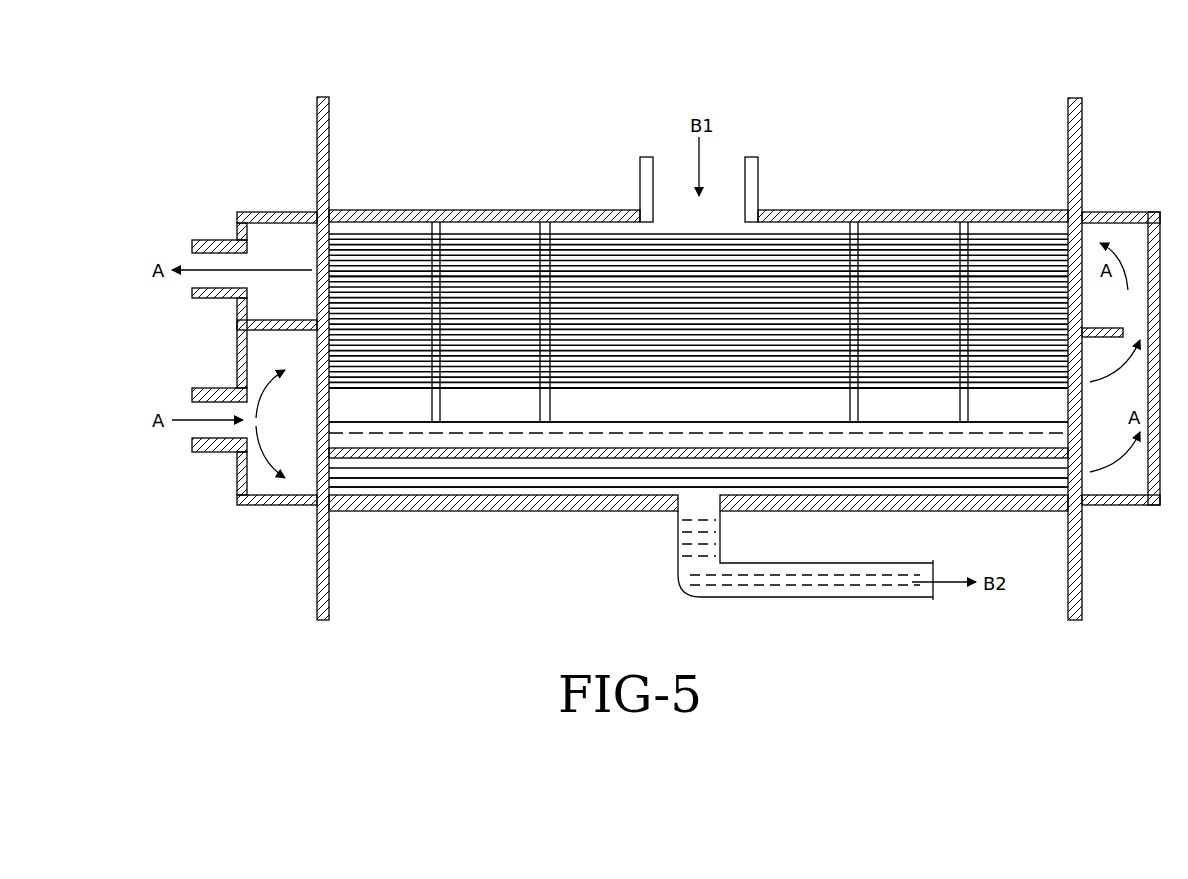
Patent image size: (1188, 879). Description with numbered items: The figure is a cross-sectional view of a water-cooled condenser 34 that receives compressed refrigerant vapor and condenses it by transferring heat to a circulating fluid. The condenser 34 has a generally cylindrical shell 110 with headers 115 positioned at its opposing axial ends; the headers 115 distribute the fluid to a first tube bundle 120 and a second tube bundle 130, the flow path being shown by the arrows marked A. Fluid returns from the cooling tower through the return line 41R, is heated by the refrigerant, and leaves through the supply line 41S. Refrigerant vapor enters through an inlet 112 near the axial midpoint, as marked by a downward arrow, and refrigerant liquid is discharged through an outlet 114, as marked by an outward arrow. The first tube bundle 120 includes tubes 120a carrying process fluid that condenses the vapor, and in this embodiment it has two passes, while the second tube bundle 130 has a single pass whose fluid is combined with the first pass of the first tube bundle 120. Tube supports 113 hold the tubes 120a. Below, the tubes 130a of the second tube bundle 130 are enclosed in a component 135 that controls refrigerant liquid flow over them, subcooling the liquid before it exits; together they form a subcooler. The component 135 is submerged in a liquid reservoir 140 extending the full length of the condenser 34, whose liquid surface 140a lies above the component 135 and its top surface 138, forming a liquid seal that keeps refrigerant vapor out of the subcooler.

The condenser 34 is at (222, 78).
The supply line 41S is at (240, 240).
The return line 41R is at (240, 455).
The shell 110 is at (966, 200).
The inlet 112 is at (760, 192).
The tube supports 113 is at (432, 222).
The outlet 114 is at (678, 540).
The headers 115 is at (286, 212).
The first tube bundle 120 is at (468, 228).
The tubes 120a is at (872, 275).
The second tube bundle 130 is at (416, 490).
The tubes 130a is at (885, 478).
The component 135 is at (992, 458).
The top surface 138 is at (392, 450).
The liquid reservoir 140 is at (526, 416).
The liquid surface 140a is at (642, 420).